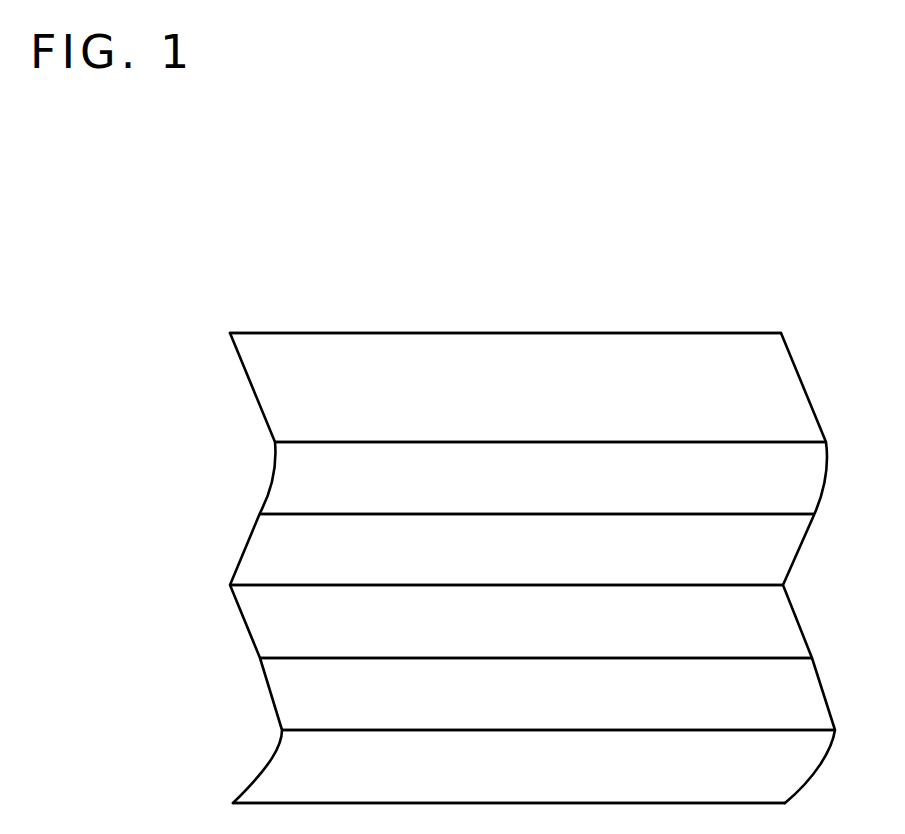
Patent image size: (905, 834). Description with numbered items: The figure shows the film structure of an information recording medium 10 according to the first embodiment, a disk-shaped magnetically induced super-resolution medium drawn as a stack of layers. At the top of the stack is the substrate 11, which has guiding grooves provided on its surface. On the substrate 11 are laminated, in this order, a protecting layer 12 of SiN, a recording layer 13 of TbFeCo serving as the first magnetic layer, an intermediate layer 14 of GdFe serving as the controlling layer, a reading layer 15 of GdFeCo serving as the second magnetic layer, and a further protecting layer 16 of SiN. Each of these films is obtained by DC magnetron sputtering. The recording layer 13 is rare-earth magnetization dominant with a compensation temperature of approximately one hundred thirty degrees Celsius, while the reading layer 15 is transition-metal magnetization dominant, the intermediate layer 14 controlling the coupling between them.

The information recording medium 10 is at (683, 306).
The substrate 11 is at (300, 410).
The protecting layer 12 is at (295, 490).
The recording layer 13 is at (258, 555).
The intermediate layer 14 is at (275, 628).
The reading layer 15 is at (300, 702).
The protecting layer 16 is at (285, 778).